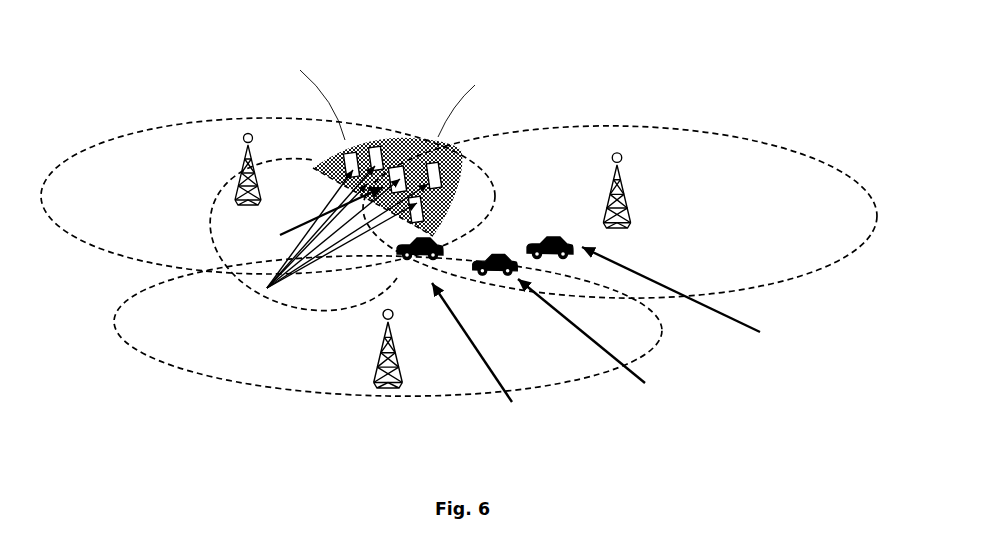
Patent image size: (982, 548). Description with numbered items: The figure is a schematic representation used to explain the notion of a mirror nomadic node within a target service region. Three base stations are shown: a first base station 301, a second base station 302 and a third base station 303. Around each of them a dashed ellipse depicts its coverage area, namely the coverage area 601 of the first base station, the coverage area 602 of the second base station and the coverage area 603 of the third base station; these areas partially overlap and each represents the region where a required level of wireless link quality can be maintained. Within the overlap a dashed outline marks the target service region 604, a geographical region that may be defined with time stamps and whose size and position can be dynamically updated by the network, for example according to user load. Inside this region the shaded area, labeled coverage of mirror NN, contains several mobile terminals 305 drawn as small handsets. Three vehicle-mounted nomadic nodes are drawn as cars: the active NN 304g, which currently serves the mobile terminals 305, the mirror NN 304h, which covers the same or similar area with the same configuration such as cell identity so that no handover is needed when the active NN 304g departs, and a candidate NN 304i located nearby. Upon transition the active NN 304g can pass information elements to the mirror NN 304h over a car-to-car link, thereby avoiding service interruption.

The coverage area of first base station 601 is at (105, 141).
The coverage area of second base station 602 is at (750, 134).
The coverage area of third base station 603 is at (150, 362).
The target service region 604 is at (460, 108).
The first base station 301 is at (243, 143).
The second base station 302 is at (621, 161).
The third base station 303 is at (385, 321).
The active nomadic node 304g is at (421, 263).
The mirror nomadic node 304h is at (508, 274).
The candidate nomadic node 304i is at (551, 258).
The mobile terminal 305 is at (338, 227).